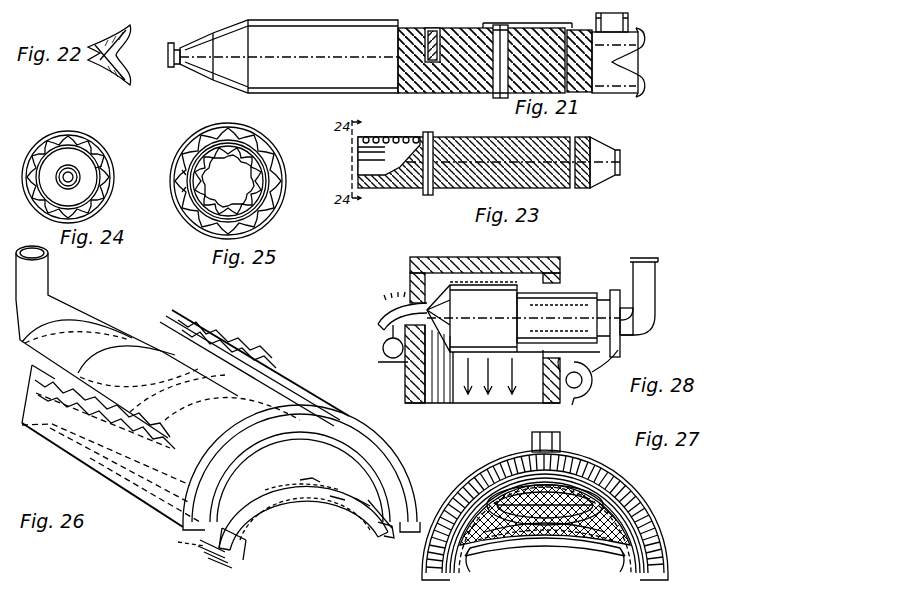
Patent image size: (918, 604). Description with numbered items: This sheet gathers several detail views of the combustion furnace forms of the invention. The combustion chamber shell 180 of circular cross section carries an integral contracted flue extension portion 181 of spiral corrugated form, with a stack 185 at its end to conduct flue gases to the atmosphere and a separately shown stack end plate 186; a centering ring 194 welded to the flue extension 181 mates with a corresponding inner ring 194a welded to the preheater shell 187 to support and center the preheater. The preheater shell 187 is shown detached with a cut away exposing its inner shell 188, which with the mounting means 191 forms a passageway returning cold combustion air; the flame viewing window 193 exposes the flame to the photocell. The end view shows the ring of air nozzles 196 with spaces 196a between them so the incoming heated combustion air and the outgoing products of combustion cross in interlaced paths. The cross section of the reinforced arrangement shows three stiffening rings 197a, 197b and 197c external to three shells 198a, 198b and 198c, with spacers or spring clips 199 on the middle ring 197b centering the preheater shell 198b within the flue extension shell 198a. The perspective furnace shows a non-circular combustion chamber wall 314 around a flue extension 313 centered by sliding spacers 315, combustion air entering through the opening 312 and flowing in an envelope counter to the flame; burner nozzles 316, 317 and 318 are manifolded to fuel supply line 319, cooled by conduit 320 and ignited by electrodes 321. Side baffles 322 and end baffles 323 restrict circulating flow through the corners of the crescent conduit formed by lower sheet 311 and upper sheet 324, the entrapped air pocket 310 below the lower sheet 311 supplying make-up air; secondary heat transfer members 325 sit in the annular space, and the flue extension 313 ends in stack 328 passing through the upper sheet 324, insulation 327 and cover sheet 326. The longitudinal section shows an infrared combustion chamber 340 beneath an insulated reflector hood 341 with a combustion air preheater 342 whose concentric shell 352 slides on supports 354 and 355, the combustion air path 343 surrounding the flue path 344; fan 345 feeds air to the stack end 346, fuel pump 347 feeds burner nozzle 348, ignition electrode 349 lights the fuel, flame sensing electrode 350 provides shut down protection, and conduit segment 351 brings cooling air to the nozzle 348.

In FIG. 21, the combustion chamber shell 180 is at (275, 27).
In FIG. 21, the flue extension portion 181 is at (485, 49).
In FIG. 21, the stack 185 is at (620, 14).
In FIG. 21, the stack end plate 186 is at (640, 96).
In FIG. 22, the stack end plate 186 is at (100, 62).
In FIG. 23, the preheater shell 187 is at (450, 138).
In FIG. 24, the preheater shell 187 is at (88, 139).
In FIG. 23, the inner shell 188 is at (374, 140).
In FIG. 24, the inner shell 188 is at (80, 160).
In FIG. 24, the mounting means 191 is at (60, 180).
In FIG. 24, the flame viewing window 193 is at (70, 182).
In FIG. 21, the centering ring 194 is at (432, 30).
In FIG. 23, the inner ring 194a is at (428, 195).
In FIG. 24, the inner ring 194a is at (100, 160).
In FIG. 24, the nozzles 196 is at (40, 140).
In FIG. 24, the spaces 196a is at (58, 134).
In FIG. 25, the outer reinforcing ring 197a is at (252, 132).
In FIG. 25, the middle reinforcing ring 197b is at (270, 150).
In FIG. 25, the inner reinforcing ring 197c is at (266, 182).
In FIG. 25, the flue extension shell 198a is at (207, 128).
In FIG. 25, the preheater shell 198b is at (230, 150).
In FIG. 25, the inner shell 198c is at (196, 186).
In FIG. 25, the spacers or spring clips 199 is at (185, 198).
In FIG. 26, the entrapped air pocket 310 is at (318, 522).
In FIG. 27, the entrapped air pocket 310 is at (538, 560).
In FIG. 26, the conduit lower sheet 311 is at (240, 540).
In FIG. 27, the conduit lower sheet 311 is at (558, 535).
In FIG. 26, the opening 312 is at (98, 425).
In FIG. 27, the opening 312 is at (580, 540).
In FIG. 26, the flue extension 313 is at (110, 330).
In FIG. 27, the flue extension 313 is at (578, 470).
In FIG. 26, the combustion chamber wall 314 is at (225, 348).
In FIG. 27, the combustion chamber wall 314 is at (600, 480).
In FIG. 27, the spacers 315 is at (505, 462).
In FIG. 26, the burner nozzle 316 is at (275, 482).
In FIG. 26, the burner nozzle 317 is at (330, 502).
In FIG. 26, the burner nozzle 318 is at (350, 512).
In FIG. 26, the fuel supply line 319 is at (190, 543).
In FIG. 26, the conduit 320 is at (240, 560).
In FIG. 26, the electrodes 321 is at (305, 470).
In FIG. 26, the side baffles 322 is at (160, 418).
In FIG. 27, the side baffles 322 is at (475, 548).
In FIG. 26, the end baffles 323 is at (380, 540).
In FIG. 26, the upper sheet 324 is at (395, 455).
In FIG. 27, the upper sheet 324 is at (628, 486).
In FIG. 27, the secondary heat transfer members 325 is at (515, 535).
In FIG. 26, the cover sheet 326 is at (340, 420).
In FIG. 27, the cover sheet 326 is at (648, 500).
In FIG. 26, the insulation 327 is at (165, 362).
In FIG. 27, the insulation 327 is at (655, 525).
In FIG. 27, the stack 328 is at (560, 445).
In FIG. 28, the infrared combustion chamber 340 is at (480, 285).
In FIG. 28, the insulated reflector hood 341 is at (545, 262).
In FIG. 28, the combustion air preheater 342 is at (636, 290).
In FIG. 28, the combustion air path 343 is at (560, 305).
In FIG. 28, the flue path 344 is at (585, 333).
In FIG. 28, the fan 345 is at (577, 398).
In FIG. 28, the stack end 346 is at (622, 345).
In FIG. 28, the fuel pump 347 is at (383, 353).
In FIG. 28, the burner nozzle 348 is at (447, 318).
In FIG. 28, the ignition electrode 349 is at (398, 302).
In FIG. 28, the flame sensing electrode 350 is at (435, 352).
In FIG. 28, the conduit segment 351 is at (378, 318).
In FIG. 28, the concentric shell 352 is at (578, 290).
In FIG. 28, the support 354 is at (527, 332).
In FIG. 28, the support 355 is at (495, 282).